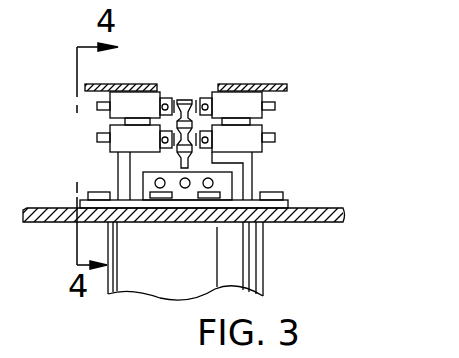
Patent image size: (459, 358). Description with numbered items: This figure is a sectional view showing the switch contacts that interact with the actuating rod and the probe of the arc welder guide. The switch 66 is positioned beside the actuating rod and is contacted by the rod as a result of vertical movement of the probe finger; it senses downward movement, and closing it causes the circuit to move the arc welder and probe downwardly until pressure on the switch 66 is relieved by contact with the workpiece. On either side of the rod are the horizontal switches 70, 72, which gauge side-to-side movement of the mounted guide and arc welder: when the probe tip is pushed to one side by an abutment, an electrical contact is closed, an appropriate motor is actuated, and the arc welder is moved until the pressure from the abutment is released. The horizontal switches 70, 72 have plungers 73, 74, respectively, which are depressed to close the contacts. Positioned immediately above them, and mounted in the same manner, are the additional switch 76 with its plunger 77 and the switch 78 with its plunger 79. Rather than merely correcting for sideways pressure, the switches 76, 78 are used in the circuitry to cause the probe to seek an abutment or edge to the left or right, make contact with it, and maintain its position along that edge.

The switch 66 is at (197, 179).
The horizontal switch 70 is at (115, 133).
The horizontal switch 72 is at (255, 132).
The plunger 73 is at (163, 142).
The plunger 74 is at (250, 146).
The switch 76 is at (117, 97).
The plunger 77 is at (163, 98).
The switch 78 is at (250, 100).
The plunger 79 is at (203, 98).